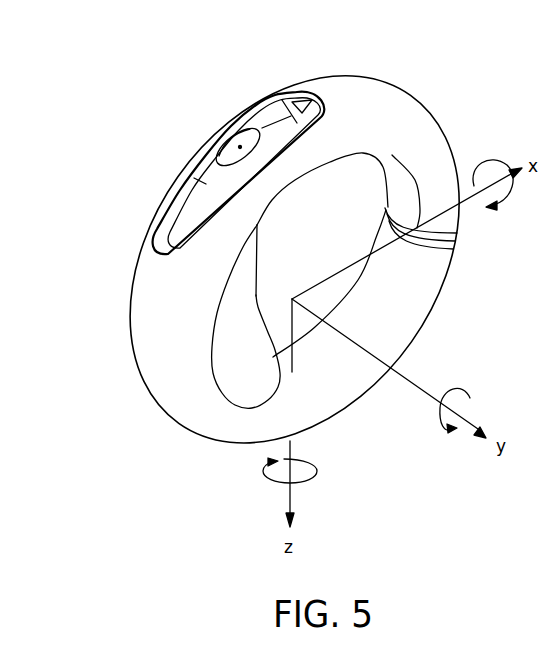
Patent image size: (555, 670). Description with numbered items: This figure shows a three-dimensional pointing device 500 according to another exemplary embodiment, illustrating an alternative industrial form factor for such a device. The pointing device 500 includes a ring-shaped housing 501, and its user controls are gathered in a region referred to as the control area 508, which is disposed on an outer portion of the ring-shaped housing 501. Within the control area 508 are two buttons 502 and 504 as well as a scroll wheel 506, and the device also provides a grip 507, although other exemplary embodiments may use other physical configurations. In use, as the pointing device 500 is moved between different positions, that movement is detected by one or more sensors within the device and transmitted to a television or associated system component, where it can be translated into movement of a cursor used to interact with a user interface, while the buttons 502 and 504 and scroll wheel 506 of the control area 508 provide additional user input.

The 3D pointing device 500 is at (97, 284).
The ring-shaped housing 501 is at (386, 94).
The button 502 is at (190, 160).
The button 504 is at (242, 180).
The scroll wheel 506 is at (237, 142).
The grip 507 is at (258, 296).
The control area 508 is at (261, 102).